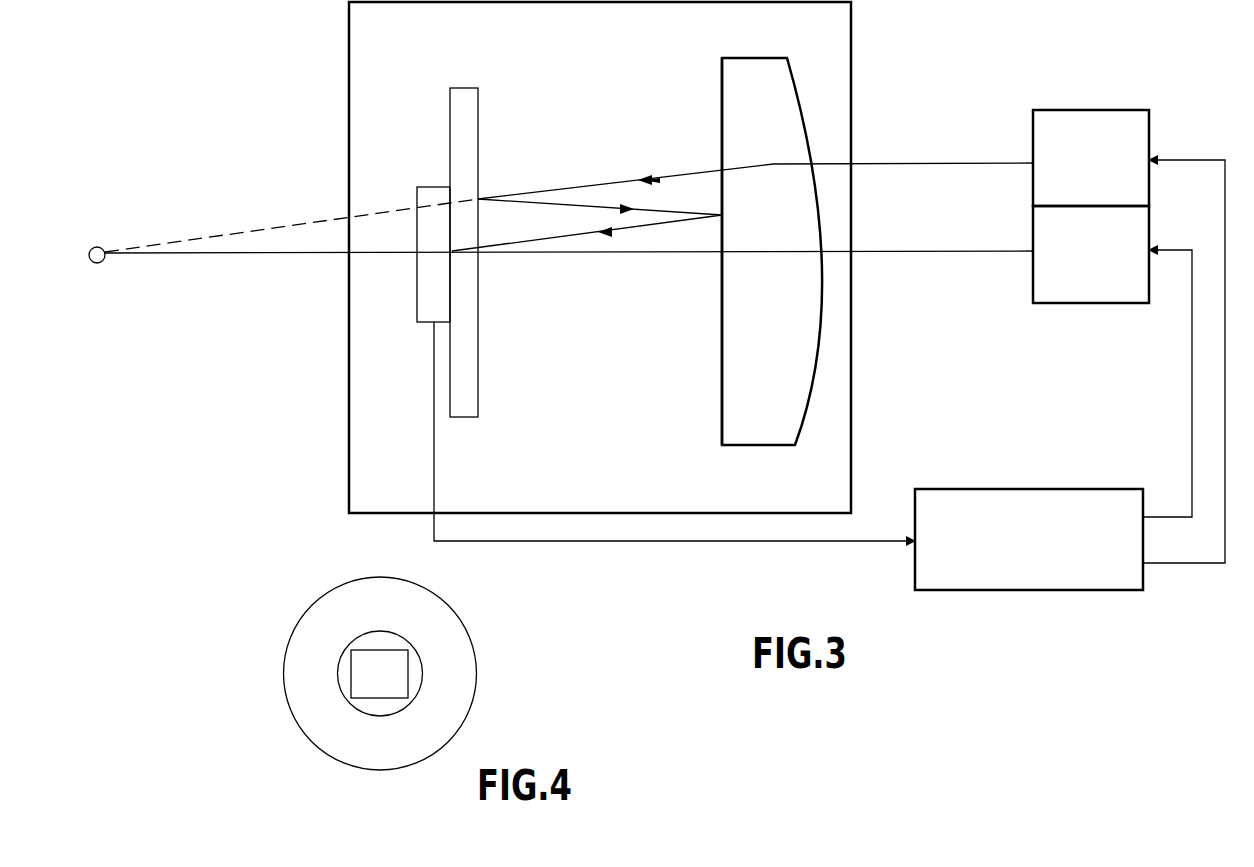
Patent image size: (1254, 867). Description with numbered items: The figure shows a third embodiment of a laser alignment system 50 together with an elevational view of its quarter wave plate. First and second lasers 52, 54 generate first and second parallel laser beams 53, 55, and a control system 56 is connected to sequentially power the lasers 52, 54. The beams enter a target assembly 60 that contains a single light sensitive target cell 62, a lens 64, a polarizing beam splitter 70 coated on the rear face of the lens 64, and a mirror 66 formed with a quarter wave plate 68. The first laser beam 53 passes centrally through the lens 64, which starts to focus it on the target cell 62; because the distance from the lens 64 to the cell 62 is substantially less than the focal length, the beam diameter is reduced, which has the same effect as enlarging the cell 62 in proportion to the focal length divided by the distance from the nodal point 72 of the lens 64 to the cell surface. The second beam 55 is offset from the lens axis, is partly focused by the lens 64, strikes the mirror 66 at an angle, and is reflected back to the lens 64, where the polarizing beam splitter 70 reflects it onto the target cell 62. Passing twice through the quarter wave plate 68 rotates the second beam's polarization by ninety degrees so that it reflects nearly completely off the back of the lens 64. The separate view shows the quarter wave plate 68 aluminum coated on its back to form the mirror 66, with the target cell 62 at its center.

In FIG. 3, the laser alignment system 50 is at (1014, 42).
In FIG. 3, the first laser 52 is at (1093, 303).
In FIG. 3, the first laser beam 53 is at (903, 250).
In FIG. 3, the second laser 54 is at (1093, 110).
In FIG. 3, the second laser beam 55 is at (903, 162).
In FIG. 3, the control system 56 is at (988, 489).
In FIG. 3, the target assembly 60 is at (349, 83).
In FIG. 3, the target cell 62 is at (432, 187).
In FIG. 4, the target cell 62 is at (380, 698).
In FIG. 3, the lens 64 is at (797, 78).
In FIG. 4, the mirror 66 is at (417, 653).
In FIG. 3, the quarter wave plate 68 is at (478, 335).
In FIG. 4, the quarter wave plate 68 is at (305, 610).
In FIG. 3, the polarizing beam splitter 70 is at (720, 82).
In FIG. 3, the nodal point 72 is at (97, 263).